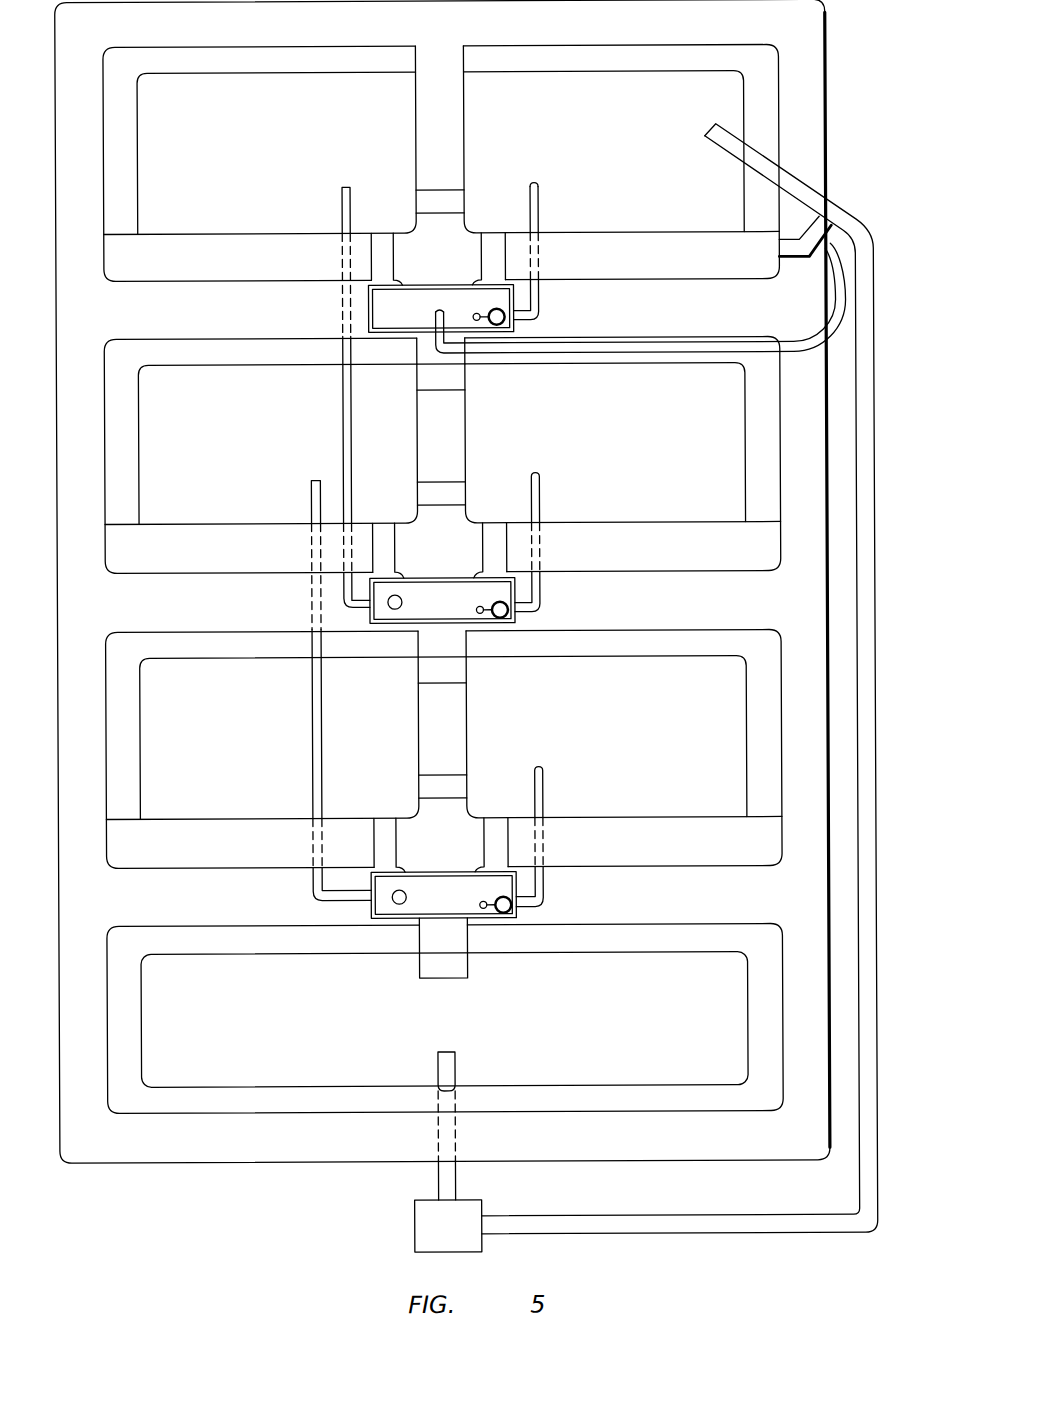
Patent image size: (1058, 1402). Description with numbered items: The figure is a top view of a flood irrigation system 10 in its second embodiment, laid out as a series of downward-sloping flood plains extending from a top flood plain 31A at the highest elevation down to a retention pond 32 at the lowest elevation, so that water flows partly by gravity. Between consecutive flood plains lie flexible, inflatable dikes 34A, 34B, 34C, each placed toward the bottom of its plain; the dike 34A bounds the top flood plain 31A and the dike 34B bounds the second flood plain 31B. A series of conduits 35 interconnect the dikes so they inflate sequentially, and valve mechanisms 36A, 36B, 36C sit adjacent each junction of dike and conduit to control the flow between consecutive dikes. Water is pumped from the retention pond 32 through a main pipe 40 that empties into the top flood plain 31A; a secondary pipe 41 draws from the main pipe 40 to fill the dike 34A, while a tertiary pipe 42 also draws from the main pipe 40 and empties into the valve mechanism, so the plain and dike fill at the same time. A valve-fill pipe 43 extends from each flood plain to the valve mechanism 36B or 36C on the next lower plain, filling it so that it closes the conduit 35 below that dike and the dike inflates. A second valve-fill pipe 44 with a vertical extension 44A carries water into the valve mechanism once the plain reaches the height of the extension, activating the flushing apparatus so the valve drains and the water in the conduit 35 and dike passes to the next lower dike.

The flood irrigation system 10 is at (906, 898).
The top flood plain 31A is at (655, 450).
The second flood plain 31B is at (250, 450).
The retention pond 32 is at (588, 1026).
The dike 34A is at (250, 262).
The dike 34B is at (250, 558).
The dike 34C is at (250, 853).
The conduit 35 is at (452, 142).
The valve mechanism 36A is at (517, 330).
The valve mechanism 36B is at (517, 622).
The valve mechanism 36C is at (519, 917).
The main pipe 40 is at (796, 178).
The secondary pipe 41 is at (822, 227).
The tertiary pipe 42 is at (840, 307).
The valve-fill pipe 43 is at (347, 203).
The second valve-fill pipe 44 is at (537, 207).
The vertical extension 44A is at (533, 182).